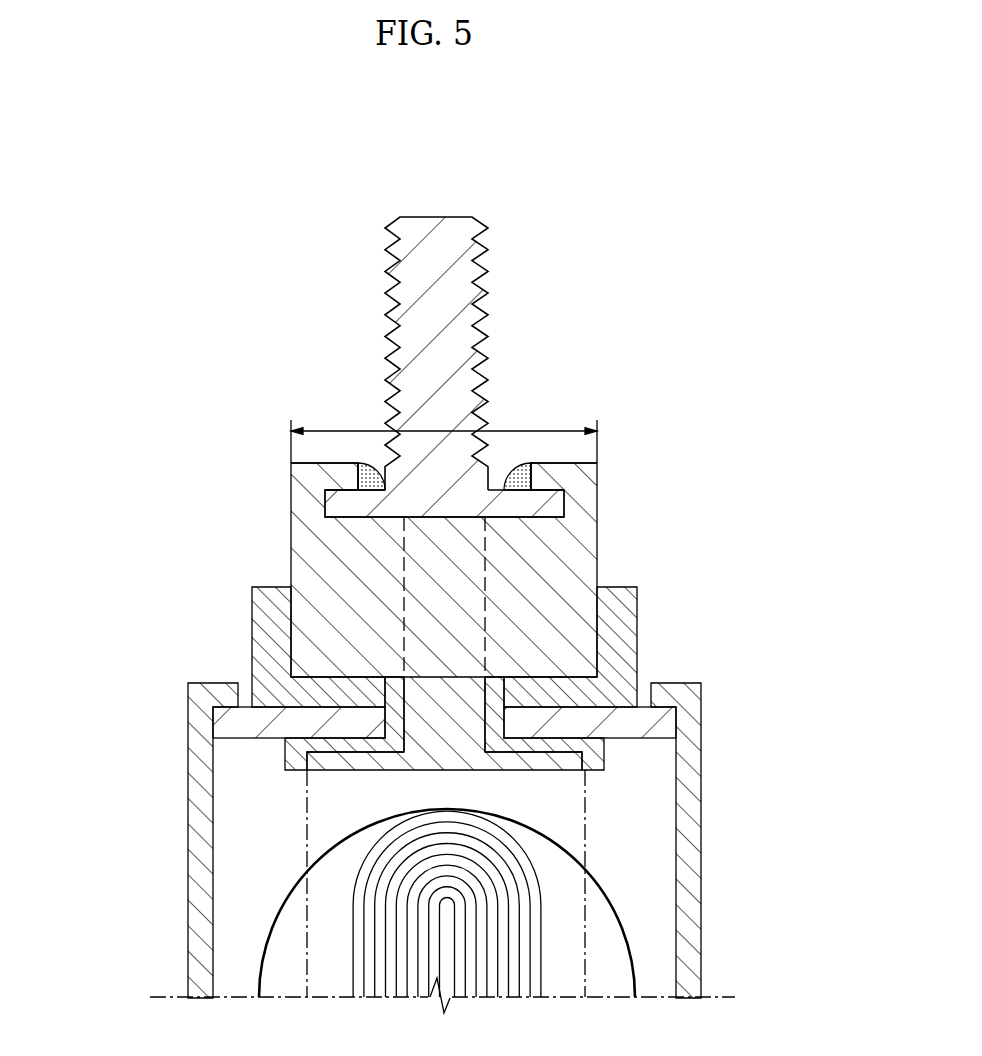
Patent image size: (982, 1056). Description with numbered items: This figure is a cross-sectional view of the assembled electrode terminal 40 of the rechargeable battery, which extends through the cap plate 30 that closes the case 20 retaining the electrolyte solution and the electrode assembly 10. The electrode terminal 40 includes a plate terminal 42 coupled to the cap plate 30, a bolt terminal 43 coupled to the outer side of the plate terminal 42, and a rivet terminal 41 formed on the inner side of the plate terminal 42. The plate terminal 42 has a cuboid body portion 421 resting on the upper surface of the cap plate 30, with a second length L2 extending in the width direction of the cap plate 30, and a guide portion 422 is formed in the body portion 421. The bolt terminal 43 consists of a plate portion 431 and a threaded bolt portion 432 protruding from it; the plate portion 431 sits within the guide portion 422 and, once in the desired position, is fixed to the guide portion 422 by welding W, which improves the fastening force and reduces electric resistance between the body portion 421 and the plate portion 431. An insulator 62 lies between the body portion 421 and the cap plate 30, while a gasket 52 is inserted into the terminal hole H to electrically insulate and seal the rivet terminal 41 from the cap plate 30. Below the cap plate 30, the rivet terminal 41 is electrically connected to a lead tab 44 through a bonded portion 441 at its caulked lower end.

The electrode assembly 10 is at (283, 900).
The case 20 is at (195, 942).
The cap plate 30 is at (632, 723).
The electrode terminal 40 is at (549, 279).
The rivet terminal 41 is at (447, 768).
The plate terminal 42 is at (191, 467).
The bolt terminal 43 is at (272, 257).
The lead tab 44 is at (305, 818).
The gasket 52 is at (288, 752).
The insulator 62 is at (257, 625).
The body portion 421 is at (307, 542).
The guide portion 422 is at (335, 476).
The plate portion 431 is at (372, 497).
The bolt portion 432 is at (393, 266).
The bonded portion 441 is at (343, 768).
The welding W is at (528, 482).
The second length L2 is at (444, 430).
The terminal hole H is at (583, 790).